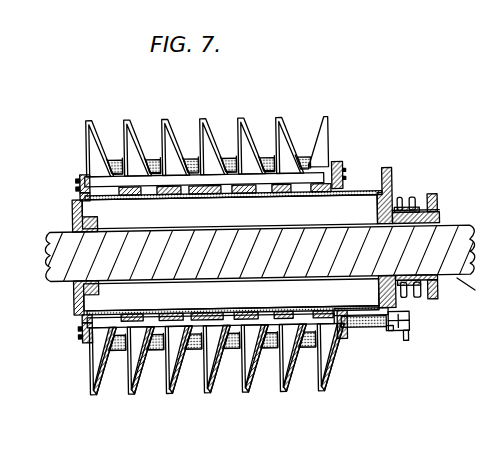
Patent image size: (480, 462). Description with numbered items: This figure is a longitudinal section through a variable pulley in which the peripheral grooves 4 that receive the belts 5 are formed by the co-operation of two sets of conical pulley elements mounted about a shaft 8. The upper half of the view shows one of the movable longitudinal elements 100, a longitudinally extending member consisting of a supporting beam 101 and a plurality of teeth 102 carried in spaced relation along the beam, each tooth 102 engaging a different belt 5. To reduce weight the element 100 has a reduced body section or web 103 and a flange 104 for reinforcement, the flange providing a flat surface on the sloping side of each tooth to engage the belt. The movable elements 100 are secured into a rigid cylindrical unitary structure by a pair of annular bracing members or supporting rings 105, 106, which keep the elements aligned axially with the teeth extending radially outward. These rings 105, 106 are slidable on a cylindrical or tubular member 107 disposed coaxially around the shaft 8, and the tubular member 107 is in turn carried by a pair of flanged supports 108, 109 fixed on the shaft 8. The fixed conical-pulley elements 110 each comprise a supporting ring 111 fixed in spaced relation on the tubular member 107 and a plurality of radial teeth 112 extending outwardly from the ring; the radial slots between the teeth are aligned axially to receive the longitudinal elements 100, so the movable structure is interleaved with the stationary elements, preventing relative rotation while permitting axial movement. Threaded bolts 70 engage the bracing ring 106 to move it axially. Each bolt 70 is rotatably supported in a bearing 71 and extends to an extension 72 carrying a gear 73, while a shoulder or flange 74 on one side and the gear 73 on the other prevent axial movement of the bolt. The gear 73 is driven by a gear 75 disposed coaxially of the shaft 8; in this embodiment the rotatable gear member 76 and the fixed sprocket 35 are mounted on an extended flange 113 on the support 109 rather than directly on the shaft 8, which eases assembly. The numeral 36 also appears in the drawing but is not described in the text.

The peripheral grooves 4 is at (151, 126).
The belts 5 is at (116, 163).
The shaft 8 is at (281, 86).
The fixed sprocket 35 is at (431, 203).
The retaining block 36 is at (421, 203).
The bolt 70 is at (357, 332).
The bearing 71 is at (388, 334).
The extension 72 is at (409, 325).
The gear 73 is at (408, 340).
The shoulder or flange 74 is at (382, 332).
The gear 75 is at (399, 203).
The rotatable gear member 76 is at (409, 203).
The longitudinal element 100 is at (90, 135).
The supporting beam 101 is at (156, 181).
The teeth 102 is at (255, 118).
The web 103 is at (81, 174).
The flange 104 is at (223, 168).
The annular bracing member 105 is at (83, 187).
The annular bracing member 106 is at (338, 164).
The tubular member 107 is at (366, 200).
The flanged support 108 is at (73, 214).
The flanged support 109 is at (383, 172).
The fixed conical-pulley element 110 is at (325, 118).
The supporting ring 111 is at (277, 196).
The radial teeth 112 is at (216, 394).
The extended flange 113 is at (428, 223).